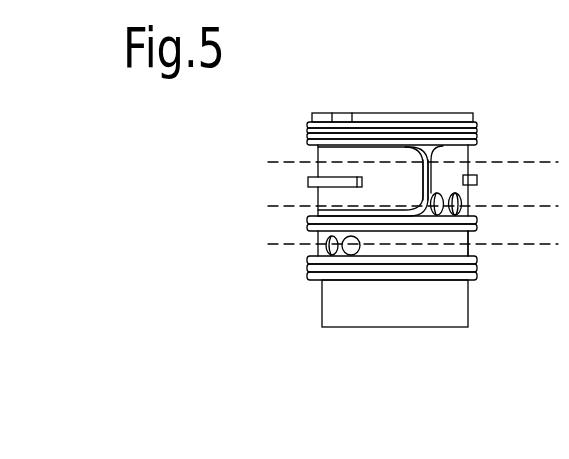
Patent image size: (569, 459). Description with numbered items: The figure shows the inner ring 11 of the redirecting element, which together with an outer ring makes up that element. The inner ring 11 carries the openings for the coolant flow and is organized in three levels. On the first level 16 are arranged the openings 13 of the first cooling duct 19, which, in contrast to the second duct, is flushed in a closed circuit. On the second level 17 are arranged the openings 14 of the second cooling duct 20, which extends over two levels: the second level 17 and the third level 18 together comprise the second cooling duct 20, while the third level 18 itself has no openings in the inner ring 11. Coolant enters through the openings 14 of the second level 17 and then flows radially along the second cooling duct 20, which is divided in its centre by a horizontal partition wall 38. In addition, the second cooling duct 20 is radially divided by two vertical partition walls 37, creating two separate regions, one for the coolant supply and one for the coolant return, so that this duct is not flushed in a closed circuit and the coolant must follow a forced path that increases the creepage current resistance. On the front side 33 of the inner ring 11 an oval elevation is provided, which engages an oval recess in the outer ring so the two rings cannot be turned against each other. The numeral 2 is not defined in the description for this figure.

The tool holder 2 is at (475, 258).
The inner ring 11 is at (305, 312).
The openings 13 is at (337, 254).
The openings 14 is at (436, 193).
The first level 16 is at (243, 248).
The second level 17 is at (243, 205).
The third level 18 is at (243, 165).
The first cooling duct 19 is at (423, 243).
The second cooling duct 20 is at (380, 185).
The front side 33 is at (398, 120).
The partition walls 37 is at (425, 168).
The horizontal partition wall 38 is at (335, 182).